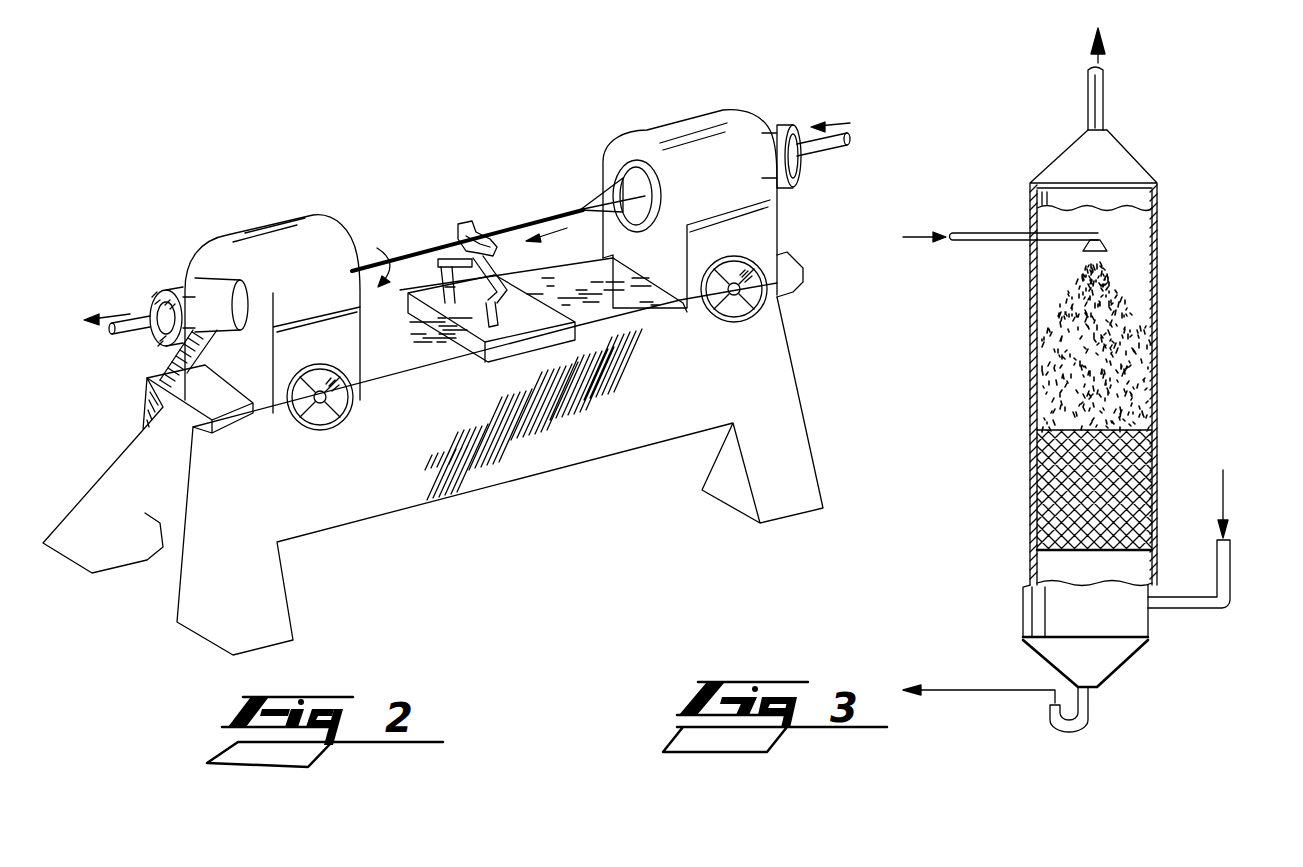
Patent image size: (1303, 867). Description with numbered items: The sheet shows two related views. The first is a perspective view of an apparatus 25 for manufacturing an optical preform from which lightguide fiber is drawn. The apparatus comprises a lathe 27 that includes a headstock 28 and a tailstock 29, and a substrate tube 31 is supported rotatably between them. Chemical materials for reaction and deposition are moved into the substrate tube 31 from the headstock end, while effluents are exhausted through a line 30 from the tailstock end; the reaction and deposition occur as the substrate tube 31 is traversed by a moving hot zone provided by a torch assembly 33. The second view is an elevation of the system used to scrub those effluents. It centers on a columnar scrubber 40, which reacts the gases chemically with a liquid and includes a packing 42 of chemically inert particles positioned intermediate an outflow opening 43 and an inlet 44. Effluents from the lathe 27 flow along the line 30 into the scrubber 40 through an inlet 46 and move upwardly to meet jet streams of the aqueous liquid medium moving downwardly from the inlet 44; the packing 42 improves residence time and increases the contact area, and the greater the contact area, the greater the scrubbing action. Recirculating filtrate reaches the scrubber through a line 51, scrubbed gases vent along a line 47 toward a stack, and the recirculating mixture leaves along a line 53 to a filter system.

In FIG. 2, the apparatus 25 is at (446, 362).
In FIG. 2, the lathe 27 is at (650, 433).
In FIG. 2, the headstock 28 is at (733, 120).
In FIG. 2, the tailstock 29 is at (312, 238).
In FIG. 2, the line 30 is at (140, 320).
In FIG. 3, the line 30 is at (1230, 556).
In FIG. 2, the substrate tube 31 is at (552, 213).
In FIG. 2, the torch assembly 33 is at (462, 222).
In FIG. 3, the scrubber 40 is at (1232, 192).
In FIG. 3, the packing 42 is at (1135, 456).
In FIG. 3, the outflow opening 43 is at (1047, 710).
In FIG. 3, the inlet 44 is at (1037, 232).
In FIG. 3, the inlet 46 is at (1150, 597).
In FIG. 3, the line 47 is at (1107, 97).
In FIG. 3, the line 51 is at (955, 233).
In FIG. 3, the line 53 is at (990, 690).